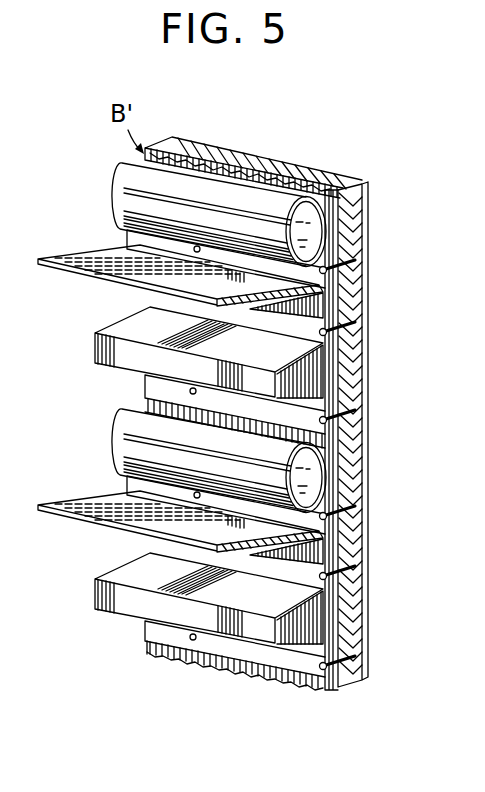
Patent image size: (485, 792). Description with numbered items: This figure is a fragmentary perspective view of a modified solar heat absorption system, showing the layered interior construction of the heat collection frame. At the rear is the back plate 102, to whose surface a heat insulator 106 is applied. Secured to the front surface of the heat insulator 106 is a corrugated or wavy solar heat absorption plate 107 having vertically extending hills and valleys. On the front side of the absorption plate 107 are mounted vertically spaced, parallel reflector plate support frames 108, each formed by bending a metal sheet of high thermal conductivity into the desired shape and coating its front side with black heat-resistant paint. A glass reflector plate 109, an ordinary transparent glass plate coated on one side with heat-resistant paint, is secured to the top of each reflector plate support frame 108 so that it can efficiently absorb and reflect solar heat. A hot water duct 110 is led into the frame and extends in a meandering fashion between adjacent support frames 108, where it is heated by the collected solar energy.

The back plate 102 is at (344, 183).
The heat insulator 106 is at (284, 172).
The solar heat absorption plate 107 is at (266, 672).
The reflector plate support frame 108 is at (95, 345).
The glass reflector plate 109 is at (78, 259).
The hot water duct 110 is at (117, 186).